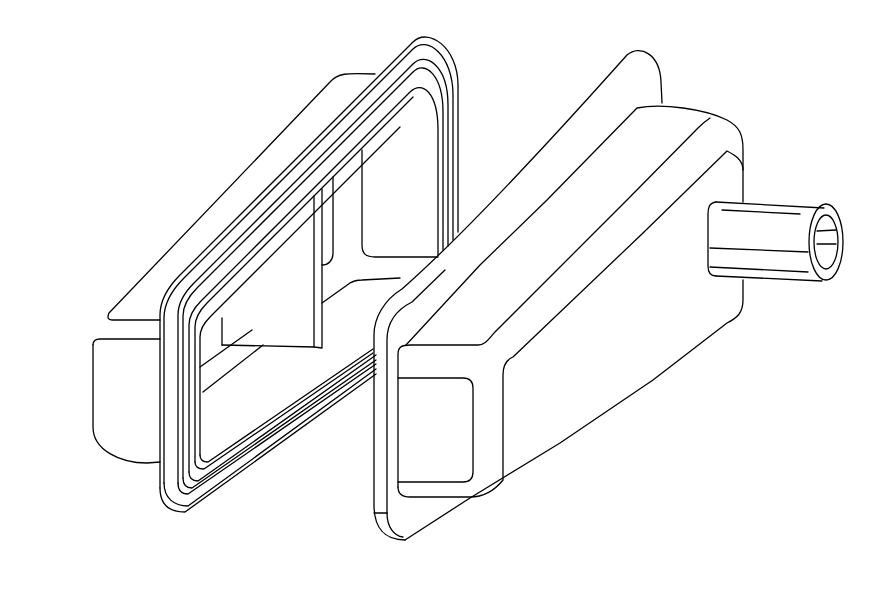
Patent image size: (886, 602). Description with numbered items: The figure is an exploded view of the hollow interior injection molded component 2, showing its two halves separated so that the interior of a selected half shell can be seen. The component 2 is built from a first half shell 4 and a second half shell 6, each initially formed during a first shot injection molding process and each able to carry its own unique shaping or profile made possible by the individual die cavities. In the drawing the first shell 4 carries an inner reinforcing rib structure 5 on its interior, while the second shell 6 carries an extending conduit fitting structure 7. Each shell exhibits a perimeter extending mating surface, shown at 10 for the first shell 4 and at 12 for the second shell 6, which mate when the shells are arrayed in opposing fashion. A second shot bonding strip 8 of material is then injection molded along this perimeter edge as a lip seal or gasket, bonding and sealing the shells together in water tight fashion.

The component 2 is at (170, 120).
The first half shell 4 is at (104, 393).
The inner reinforcing rib structure 5 is at (302, 340).
The second half shell 6 is at (531, 453).
The conduit fitting structure 7 is at (780, 225).
The second shot bonding strip 8 is at (176, 490).
The perimeter mating surface 10 is at (461, 92).
The perimeter mating surface 12 is at (662, 80).